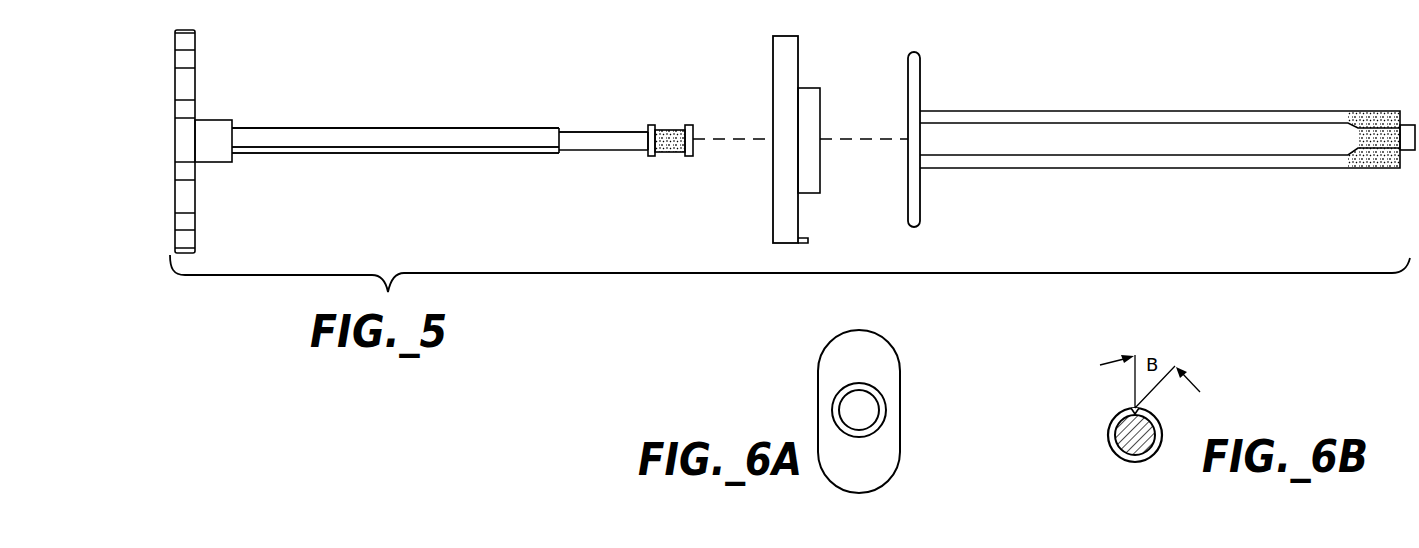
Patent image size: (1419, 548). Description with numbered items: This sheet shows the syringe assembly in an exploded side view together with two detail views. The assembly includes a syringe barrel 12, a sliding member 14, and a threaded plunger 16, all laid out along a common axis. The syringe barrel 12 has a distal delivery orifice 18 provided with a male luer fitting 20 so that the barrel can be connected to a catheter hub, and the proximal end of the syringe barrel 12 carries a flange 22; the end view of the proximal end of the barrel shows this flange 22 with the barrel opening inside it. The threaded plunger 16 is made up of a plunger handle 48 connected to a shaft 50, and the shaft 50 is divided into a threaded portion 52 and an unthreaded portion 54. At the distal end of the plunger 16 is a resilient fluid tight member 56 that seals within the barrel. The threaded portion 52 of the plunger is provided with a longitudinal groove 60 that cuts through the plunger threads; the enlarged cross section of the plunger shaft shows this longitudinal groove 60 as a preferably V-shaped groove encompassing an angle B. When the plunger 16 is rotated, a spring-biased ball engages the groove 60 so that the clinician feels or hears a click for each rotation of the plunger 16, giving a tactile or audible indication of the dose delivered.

In FIG. 5, the syringe barrel 12 is at (1125, 84).
In FIG. 6A, the syringe barrel 12 is at (924, 440).
In FIG. 5, the sliding member 14 is at (796, 22).
In FIG. 5, the threaded plunger 16 is at (505, 190).
In FIG. 5, the distal delivery orifice 18 is at (1408, 124).
In FIG. 5, the male luer fitting 20 is at (1368, 110).
In FIG. 5, the flange 22 is at (920, 198).
In FIG. 6A, the flange 22 is at (887, 366).
In FIG. 5, the plunger handle 48 is at (185, 24).
In FIG. 5, the shaft 50 is at (285, 138).
In FIG. 5, the threaded portion 52 is at (559, 110).
In FIG. 5, the unthreaded portion 54 is at (648, 110).
In FIG. 5, the resilient fluid tight member 56 is at (660, 155).
In FIG. 5, the longitudinal groove 60 is at (387, 150).